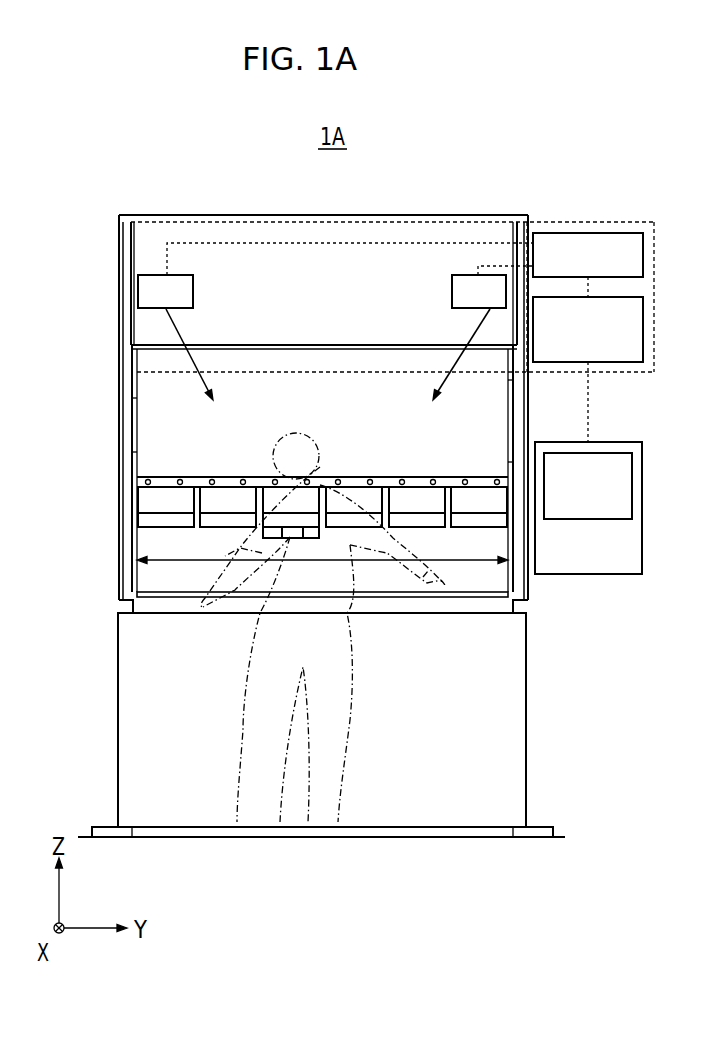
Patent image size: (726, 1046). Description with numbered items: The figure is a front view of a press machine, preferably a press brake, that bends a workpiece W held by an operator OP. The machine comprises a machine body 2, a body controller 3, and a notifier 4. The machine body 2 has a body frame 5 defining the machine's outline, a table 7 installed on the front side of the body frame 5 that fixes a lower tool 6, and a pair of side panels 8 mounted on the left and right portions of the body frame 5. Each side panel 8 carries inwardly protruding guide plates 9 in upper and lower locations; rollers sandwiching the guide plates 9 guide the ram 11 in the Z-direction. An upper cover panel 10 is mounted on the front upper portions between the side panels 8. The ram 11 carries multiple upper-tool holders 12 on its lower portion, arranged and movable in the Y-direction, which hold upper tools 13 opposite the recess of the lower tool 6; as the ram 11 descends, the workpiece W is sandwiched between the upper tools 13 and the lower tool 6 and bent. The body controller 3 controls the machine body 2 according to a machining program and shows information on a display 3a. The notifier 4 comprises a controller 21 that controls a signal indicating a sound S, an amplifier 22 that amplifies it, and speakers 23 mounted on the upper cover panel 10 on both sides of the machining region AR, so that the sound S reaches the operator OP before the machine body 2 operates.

The machine body 2 is at (549, 615).
The body controller 3 is at (642, 511).
The display 3a is at (632, 478).
The notifier 4 is at (588, 221).
The body frame 5 is at (112, 314).
The lower tool 6 is at (133, 606).
The table 7 is at (527, 722).
The side panel 8 is at (122, 397).
The guide plate 9 is at (137, 470).
The upper cover panel 10 is at (328, 275).
The ram 11 is at (150, 424).
The upper-tool holder 12 is at (228, 497).
The upper tool 13 is at (288, 540).
The controller 21 is at (644, 332).
The amplifier 22 is at (644, 254).
The speaker 23 is at (160, 275).
The sound S is at (184, 334).
The workpiece W is at (512, 587).
The machining region AR is at (370, 562).
The operator OP is at (353, 663).